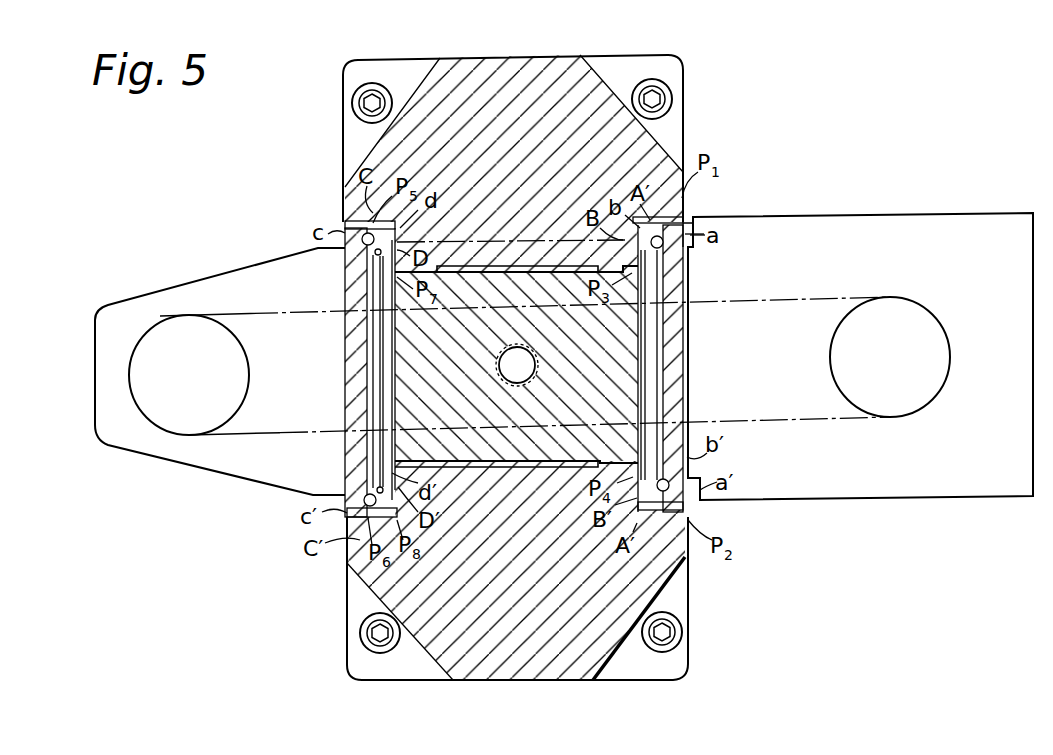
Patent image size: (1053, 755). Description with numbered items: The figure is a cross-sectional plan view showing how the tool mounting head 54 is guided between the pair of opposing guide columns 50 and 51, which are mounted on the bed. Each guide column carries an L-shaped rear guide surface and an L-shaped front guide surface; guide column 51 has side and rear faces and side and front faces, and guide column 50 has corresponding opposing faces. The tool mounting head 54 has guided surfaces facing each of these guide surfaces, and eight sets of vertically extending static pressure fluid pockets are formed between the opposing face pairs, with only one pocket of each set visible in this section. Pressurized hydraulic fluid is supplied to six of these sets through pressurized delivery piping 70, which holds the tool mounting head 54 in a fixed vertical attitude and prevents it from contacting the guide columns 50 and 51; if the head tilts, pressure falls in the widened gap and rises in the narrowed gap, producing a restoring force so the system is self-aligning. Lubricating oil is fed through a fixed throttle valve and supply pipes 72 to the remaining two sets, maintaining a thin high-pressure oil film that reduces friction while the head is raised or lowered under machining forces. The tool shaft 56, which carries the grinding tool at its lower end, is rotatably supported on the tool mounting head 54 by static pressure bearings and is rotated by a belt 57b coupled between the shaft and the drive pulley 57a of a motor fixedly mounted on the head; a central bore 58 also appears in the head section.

The guide column 50 is at (450, 597).
The guide column 51 is at (542, 63).
The tool mounting head 54 is at (283, 262).
The tool shaft 56 is at (187, 425).
The drive pulley 57a is at (927, 303).
The belt 57b is at (800, 417).
The carriage body 58 is at (533, 359).
The pressurized delivery piping 70 is at (360, 362).
The supply pipes 72 is at (378, 405).